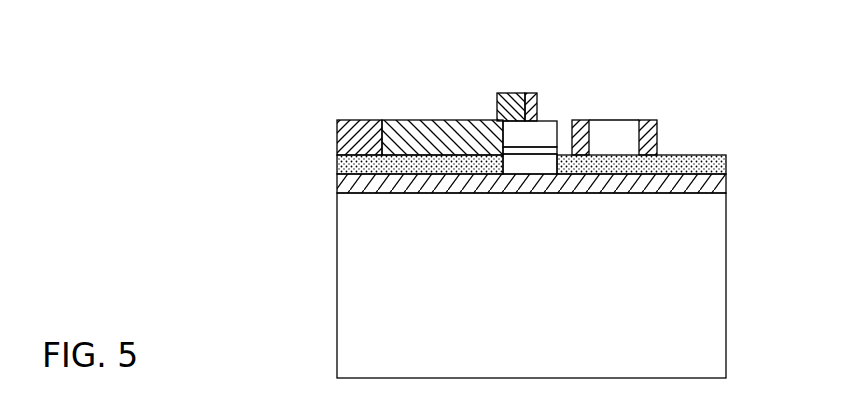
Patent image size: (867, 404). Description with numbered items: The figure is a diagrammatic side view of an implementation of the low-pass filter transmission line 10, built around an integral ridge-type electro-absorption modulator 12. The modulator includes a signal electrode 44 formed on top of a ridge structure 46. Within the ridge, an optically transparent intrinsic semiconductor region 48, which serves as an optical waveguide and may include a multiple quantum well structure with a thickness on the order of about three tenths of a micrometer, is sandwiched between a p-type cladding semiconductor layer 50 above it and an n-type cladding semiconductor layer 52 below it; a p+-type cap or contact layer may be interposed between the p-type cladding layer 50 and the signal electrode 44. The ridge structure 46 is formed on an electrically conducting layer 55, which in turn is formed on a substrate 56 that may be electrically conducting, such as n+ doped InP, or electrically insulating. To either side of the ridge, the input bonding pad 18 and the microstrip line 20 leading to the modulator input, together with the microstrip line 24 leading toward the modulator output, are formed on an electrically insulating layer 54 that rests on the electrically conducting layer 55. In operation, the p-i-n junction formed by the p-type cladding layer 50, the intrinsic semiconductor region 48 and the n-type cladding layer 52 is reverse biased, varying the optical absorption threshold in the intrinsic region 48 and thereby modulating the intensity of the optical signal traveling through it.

The low-pass filter transmission line 10 is at (182, 103).
The electro-absorption modulator 12 is at (533, 38).
The input bonding pad 18 is at (360, 120).
The microstrip line 20 is at (445, 120).
The microstrip line 24 is at (627, 111).
The signal electrode 44 is at (530, 93).
The ridge structure 46 is at (503, 47).
The intrinsic semiconductor region 48 is at (530, 150).
The p-type cladding semiconductor layer 50 is at (525, 138).
The n-type cladding semiconductor layer 52 is at (545, 163).
The electrically insulating layer 54 is at (727, 163).
The electrically conducting layer 55 is at (642, 193).
The substrate 56 is at (565, 308).